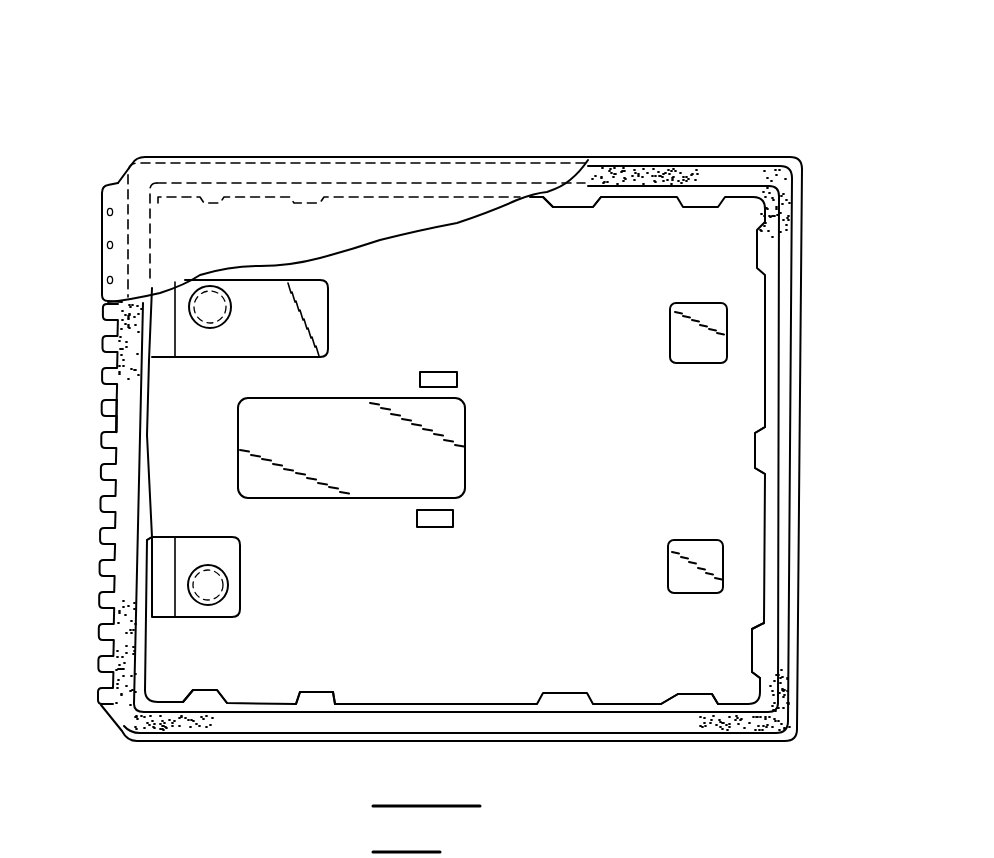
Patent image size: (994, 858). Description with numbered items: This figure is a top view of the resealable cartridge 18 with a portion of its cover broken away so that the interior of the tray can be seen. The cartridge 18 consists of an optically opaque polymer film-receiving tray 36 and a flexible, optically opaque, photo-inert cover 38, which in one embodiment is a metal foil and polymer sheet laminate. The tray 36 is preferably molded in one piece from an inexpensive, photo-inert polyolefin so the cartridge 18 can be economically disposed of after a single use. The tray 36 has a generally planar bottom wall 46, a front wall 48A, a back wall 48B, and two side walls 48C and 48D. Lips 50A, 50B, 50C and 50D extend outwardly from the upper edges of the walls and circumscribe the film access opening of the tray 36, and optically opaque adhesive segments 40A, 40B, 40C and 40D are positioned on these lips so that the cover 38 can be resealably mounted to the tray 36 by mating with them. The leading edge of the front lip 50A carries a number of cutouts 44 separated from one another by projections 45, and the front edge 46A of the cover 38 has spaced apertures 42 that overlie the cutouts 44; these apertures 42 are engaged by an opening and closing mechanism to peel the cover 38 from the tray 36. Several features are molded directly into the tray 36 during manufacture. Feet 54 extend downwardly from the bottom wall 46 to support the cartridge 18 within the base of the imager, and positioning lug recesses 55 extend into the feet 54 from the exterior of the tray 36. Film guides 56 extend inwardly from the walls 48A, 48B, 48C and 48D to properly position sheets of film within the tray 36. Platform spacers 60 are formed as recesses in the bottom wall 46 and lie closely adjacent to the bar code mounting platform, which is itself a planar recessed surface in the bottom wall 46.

The resealable cartridge 18 is at (668, 80).
The film-receiving tray 36 is at (724, 157).
The cover 38 is at (277, 234).
The adhesive segment 40A is at (127, 465).
The adhesive segment 40B is at (787, 287).
The adhesive segment 40C is at (690, 728).
The adhesive segment 40D is at (643, 177).
The apertures 42 is at (105, 213).
The cutouts 44 is at (112, 307).
The projections 45 is at (100, 393).
The bottom wall 46 is at (590, 636).
The front edge 46A is at (100, 205).
The front wall 48A is at (151, 436).
The back wall 48B is at (760, 400).
The side wall 48C is at (427, 700).
The side wall 48D is at (620, 198).
The front lip 50A is at (100, 563).
The lip 50B is at (801, 568).
The lip 50C is at (262, 742).
The lip 50D is at (588, 160).
The feet 54 is at (322, 340).
The positioning lug recesses 55 is at (223, 327).
The film guides 56 is at (575, 207).
The platform spacers 60 is at (447, 373).